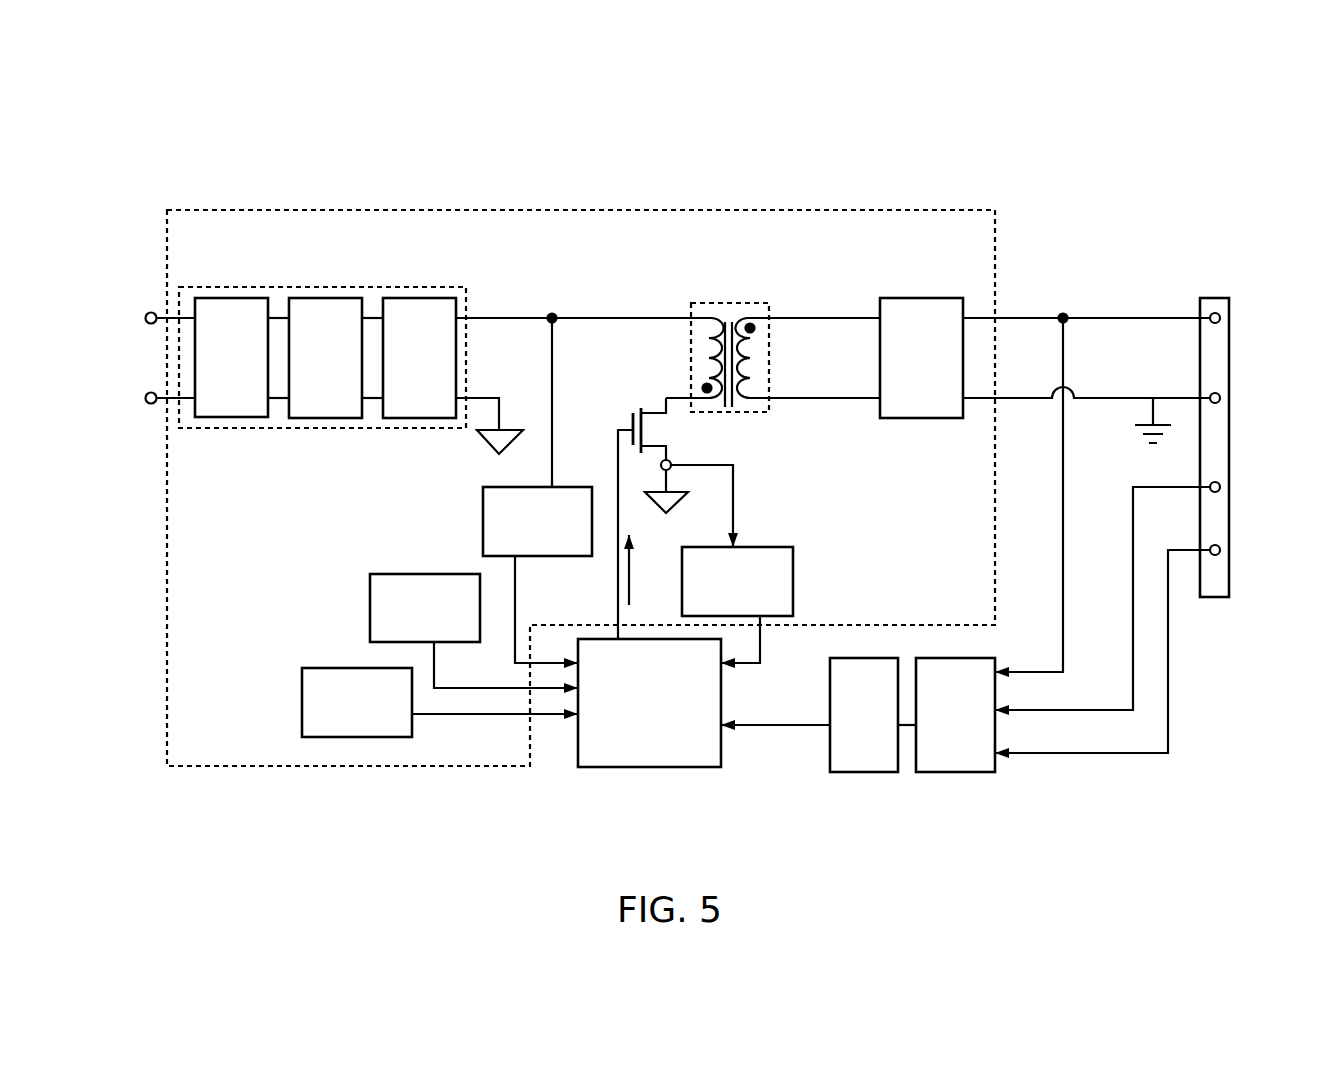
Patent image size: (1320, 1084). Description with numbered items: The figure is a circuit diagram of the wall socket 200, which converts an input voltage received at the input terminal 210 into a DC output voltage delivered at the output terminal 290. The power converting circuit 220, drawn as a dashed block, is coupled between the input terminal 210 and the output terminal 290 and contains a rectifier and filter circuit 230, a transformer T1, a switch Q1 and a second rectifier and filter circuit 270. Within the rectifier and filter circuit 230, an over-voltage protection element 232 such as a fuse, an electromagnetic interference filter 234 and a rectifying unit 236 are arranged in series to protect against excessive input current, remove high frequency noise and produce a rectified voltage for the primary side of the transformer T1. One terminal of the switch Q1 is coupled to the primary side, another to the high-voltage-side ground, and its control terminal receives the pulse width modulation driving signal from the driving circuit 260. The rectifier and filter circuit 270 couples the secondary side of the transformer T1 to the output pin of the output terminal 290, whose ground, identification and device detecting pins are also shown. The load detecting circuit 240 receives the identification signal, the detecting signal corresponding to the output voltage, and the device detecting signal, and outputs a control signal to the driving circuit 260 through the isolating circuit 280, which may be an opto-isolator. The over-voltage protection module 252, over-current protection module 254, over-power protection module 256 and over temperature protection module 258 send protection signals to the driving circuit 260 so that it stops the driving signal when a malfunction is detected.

The wall socket 200 is at (143, 188).
The input terminal 210 is at (151, 324).
The power converting circuit 220 is at (621, 210).
The rectifier and filter circuit 230 is at (348, 287).
The over-voltage protection element 232 is at (210, 371).
The electromagnetic interference filter 234 is at (304, 371).
The rectifying unit 236 is at (398, 371).
The load detecting circuit 240 is at (934, 729).
The over-voltage protection module 252 is at (516, 535).
The over-current protection module 254 is at (716, 595).
The over-power protection module 256 is at (403, 622).
The over temperature protection module 258 is at (335, 716).
The driving circuit 260 is at (628, 717).
The rectifier and filter circuit 270 is at (900, 371).
The isolating circuit 280 is at (842, 729).
The output terminal 290 is at (1210, 298).
The transformer T1 is at (724, 303).
The switch Q1 is at (641, 408).